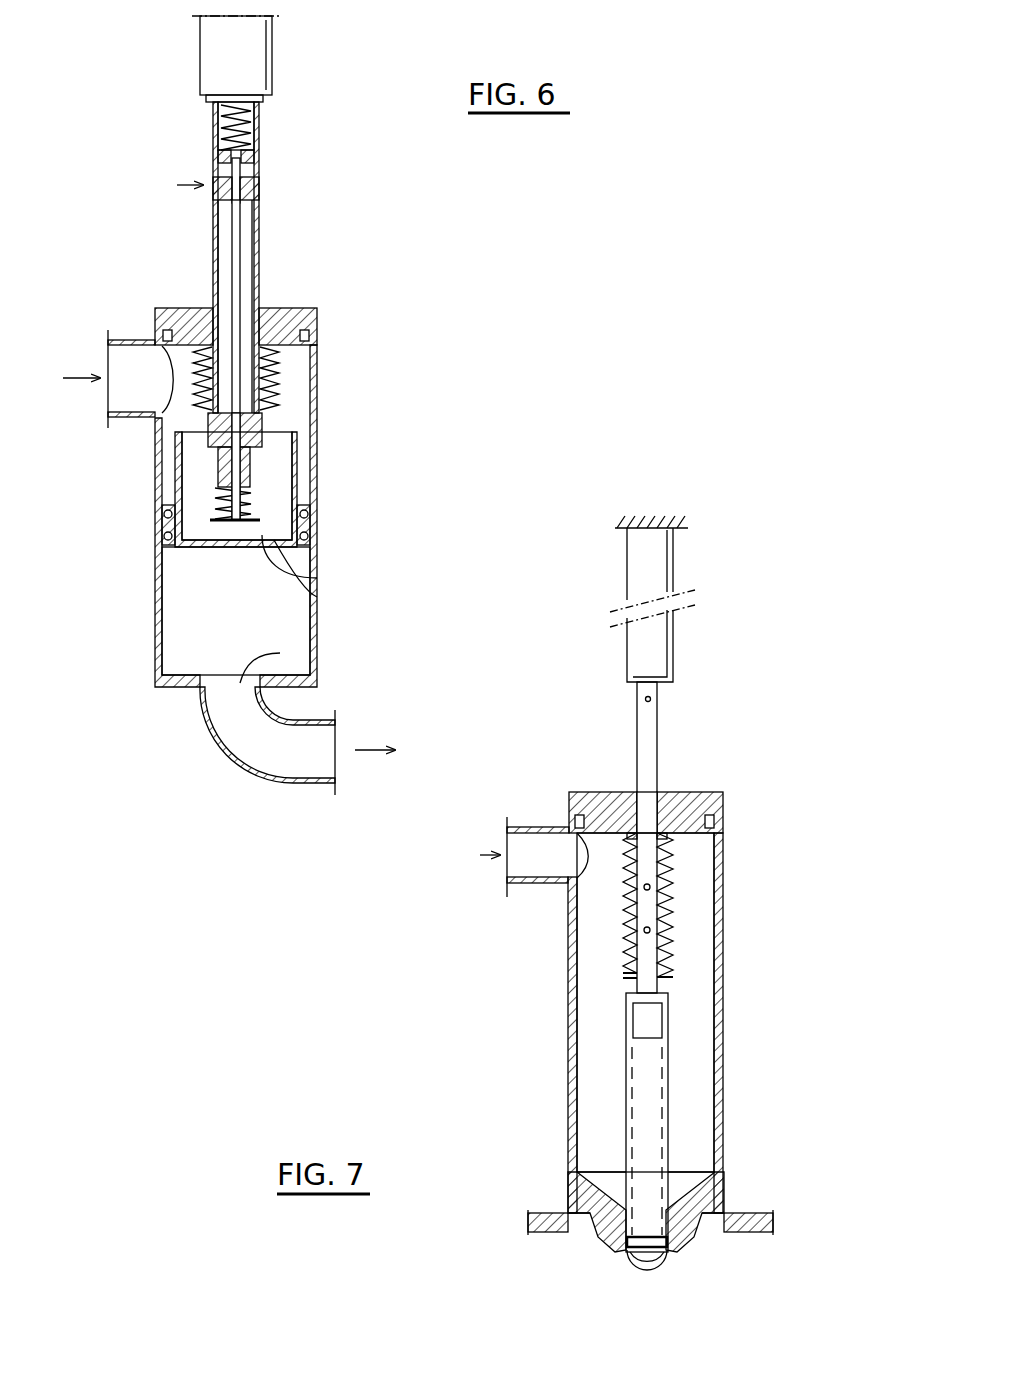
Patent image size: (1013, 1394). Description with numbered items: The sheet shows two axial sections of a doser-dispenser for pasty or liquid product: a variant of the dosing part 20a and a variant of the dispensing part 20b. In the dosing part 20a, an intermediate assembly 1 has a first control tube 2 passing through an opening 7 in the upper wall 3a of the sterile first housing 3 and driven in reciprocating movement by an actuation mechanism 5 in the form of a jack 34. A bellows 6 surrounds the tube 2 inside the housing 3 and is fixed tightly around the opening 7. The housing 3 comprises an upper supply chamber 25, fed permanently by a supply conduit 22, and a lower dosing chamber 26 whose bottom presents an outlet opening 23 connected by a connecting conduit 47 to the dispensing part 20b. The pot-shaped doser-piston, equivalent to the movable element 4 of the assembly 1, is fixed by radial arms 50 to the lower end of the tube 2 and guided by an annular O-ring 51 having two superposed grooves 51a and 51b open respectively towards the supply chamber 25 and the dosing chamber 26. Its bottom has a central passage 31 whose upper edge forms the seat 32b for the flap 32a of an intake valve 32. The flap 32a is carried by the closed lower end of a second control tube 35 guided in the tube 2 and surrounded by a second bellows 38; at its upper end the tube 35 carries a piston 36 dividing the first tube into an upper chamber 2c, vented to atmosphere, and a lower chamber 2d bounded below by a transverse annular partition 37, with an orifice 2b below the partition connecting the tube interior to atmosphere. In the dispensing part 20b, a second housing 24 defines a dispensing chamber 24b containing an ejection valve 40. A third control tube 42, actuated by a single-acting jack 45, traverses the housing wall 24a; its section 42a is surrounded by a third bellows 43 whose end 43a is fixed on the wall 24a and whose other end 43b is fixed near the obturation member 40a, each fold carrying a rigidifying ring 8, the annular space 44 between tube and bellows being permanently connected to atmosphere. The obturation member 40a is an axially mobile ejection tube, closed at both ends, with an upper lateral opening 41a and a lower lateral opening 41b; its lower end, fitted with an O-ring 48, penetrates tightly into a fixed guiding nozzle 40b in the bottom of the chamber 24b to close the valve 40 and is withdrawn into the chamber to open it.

In FIG. 6, the jack 34 is at (218, 62).
In FIG. 6, the second bellows 38 is at (247, 117).
In FIG. 6, the upper chamber 2c is at (223, 145).
In FIG. 6, the piston 36 is at (223, 156).
In FIG. 6, the lower chamber 2d is at (247, 168).
In FIG. 6, the transverse annular partition 37 is at (215, 195).
In FIG. 6, the first control tube 2 is at (212, 247).
In FIG. 6, the second control tube 35 is at (237, 283).
In FIG. 6, the housing wall 3a is at (155, 310).
In FIG. 6, the supply conduit 22 is at (125, 348).
In FIG. 6, the bellows 6 is at (290, 366).
In FIG. 6, the upper supply chamber 25 is at (288, 402).
In FIG. 6, the first sterile housing 3 is at (241, 516).
In FIG. 6, the radial arms 50 is at (197, 440).
In FIG. 6, the annular O-ring 51 is at (194, 538).
In FIG. 6, the annular groove 51a is at (165, 508).
In FIG. 6, the annular groove 51b is at (163, 560).
In FIG. 6, the dosing part 20a is at (155, 620).
In FIG. 6, the lower dosing chamber 26 is at (228, 637).
In FIG. 6, the central passage 31 is at (233, 542).
In FIG. 6, the intake valve 32 is at (381, 574).
In FIG. 6, the obturation member 32a is at (318, 578).
In FIG. 6, the valve seat 32b is at (318, 597).
In FIG. 6, the outlet opening 23 is at (280, 653).
In FIG. 6, the connecting conduit 47 is at (307, 786).
In FIG. 7, the connecting conduit 47 is at (542, 828).
In FIG. 7, the actuation mechanism 5 is at (692, 599).
In FIG. 7, the single-acting jack 45 is at (660, 633).
In FIG. 7, the transverse orifice 2b is at (652, 699).
In FIG. 7, the third control tube 42 is at (652, 745).
In FIG. 7, the housing wall 24a is at (687, 803).
In FIG. 7, the opening 7 is at (635, 793).
In FIG. 7, the bellows end 43a is at (665, 835).
In FIG. 7, the intermediate assembly 1 is at (716, 1023).
In FIG. 7, the second housing 24 is at (716, 1023).
In FIG. 7, the dispensing part 20b is at (723, 988).
In FIG. 7, the rigidifying ring 8 is at (627, 852).
In FIG. 7, the tube section 42a is at (652, 950).
In FIG. 7, the third bellows 43 is at (630, 948).
In FIG. 7, the annular space 44 is at (628, 968).
In FIG. 7, the bellows end 43b is at (662, 983).
In FIG. 7, the movable element 4 is at (675, 1156).
In FIG. 7, the obturation member 40a is at (645, 1262).
In FIG. 7, the lateral opening 41a is at (643, 1013).
In FIG. 7, the dispensing chamber 24b is at (598, 1112).
In FIG. 7, the lateral opening 41b is at (627, 1208).
In FIG. 7, the ejection valve 40 is at (661, 1216).
In FIG. 7, the fixed nozzle 40b is at (682, 1243).
In FIG. 7, the annular O-ring 48 is at (620, 1252).